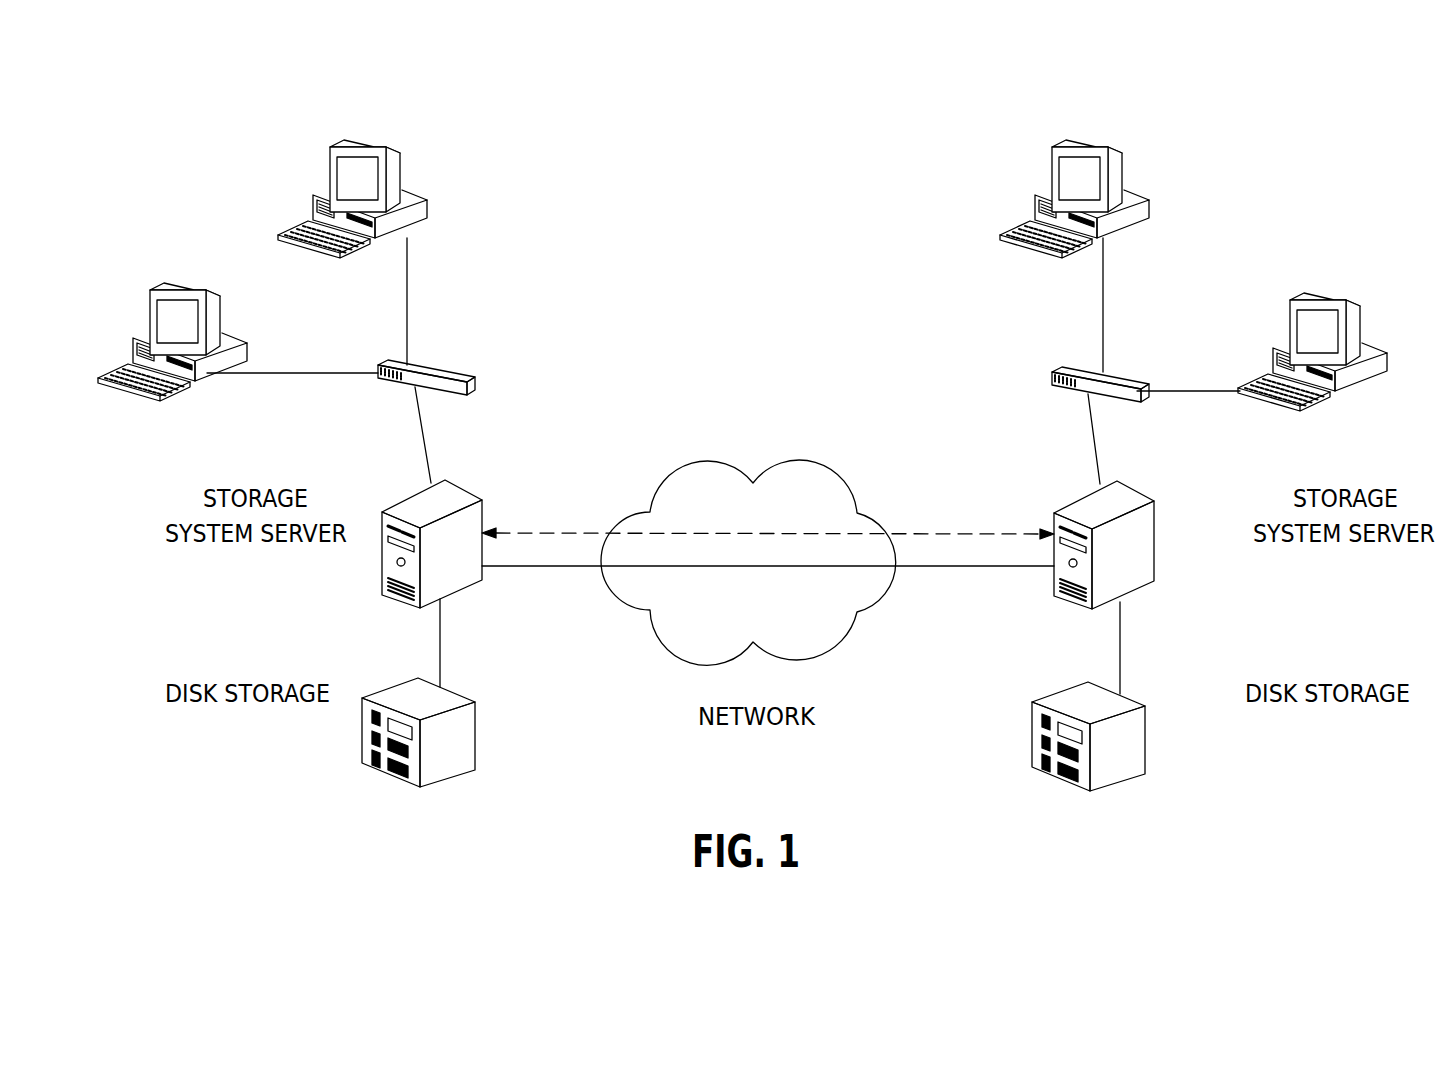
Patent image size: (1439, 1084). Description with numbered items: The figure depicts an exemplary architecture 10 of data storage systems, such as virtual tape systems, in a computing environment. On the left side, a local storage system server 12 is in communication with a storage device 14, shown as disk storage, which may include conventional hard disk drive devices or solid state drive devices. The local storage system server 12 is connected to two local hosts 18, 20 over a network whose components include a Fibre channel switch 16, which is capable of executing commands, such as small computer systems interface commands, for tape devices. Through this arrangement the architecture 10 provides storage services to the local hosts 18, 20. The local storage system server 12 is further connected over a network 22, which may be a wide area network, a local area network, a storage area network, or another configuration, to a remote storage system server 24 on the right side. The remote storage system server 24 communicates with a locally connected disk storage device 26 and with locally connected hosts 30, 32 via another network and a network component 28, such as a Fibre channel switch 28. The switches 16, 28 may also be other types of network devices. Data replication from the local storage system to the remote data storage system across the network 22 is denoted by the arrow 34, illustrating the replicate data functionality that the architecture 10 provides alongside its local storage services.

The architecture 10 is at (1316, 110).
The local storage system server 12 is at (457, 483).
The storage device 14 is at (477, 733).
The Fibre channel switch 16 is at (425, 370).
The local host 18 is at (220, 315).
The local host 20 is at (400, 172).
The network 22 is at (835, 482).
The remote storage system server 24 is at (1153, 552).
The disk storage device 26 is at (1147, 740).
The Fibre channel switch 28 is at (1073, 368).
The host 30 is at (1122, 170).
The host 32 is at (1362, 322).
The arrow 34 is at (927, 534).